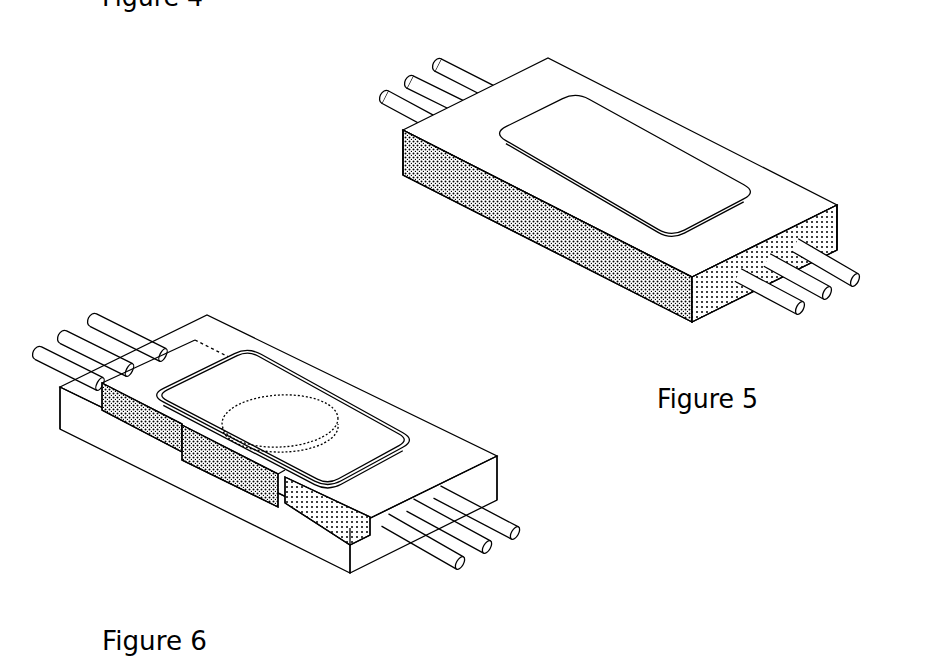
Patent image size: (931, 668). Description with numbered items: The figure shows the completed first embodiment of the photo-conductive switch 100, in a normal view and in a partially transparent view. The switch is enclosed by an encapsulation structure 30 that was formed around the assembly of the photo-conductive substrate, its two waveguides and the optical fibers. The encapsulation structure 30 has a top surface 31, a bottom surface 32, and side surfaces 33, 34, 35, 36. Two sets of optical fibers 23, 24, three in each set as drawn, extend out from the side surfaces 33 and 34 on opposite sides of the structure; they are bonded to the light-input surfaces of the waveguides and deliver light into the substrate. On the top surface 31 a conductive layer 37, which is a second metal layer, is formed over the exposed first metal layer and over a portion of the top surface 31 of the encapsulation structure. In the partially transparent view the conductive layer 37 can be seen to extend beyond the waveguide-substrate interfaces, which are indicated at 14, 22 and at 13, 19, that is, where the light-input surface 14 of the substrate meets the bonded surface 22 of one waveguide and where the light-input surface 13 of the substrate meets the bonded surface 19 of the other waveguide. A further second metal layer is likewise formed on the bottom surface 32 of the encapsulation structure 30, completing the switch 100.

In FIG. 5, the photo-conductive switch 100 is at (621, 180).
In FIG. 6, the photo-conductive switch 100 is at (280, 435).
In FIG. 5, the encapsulation structure 30 is at (623, 197).
In FIG. 6, the encapsulation structure 30 is at (285, 448).
In FIG. 5, the top surface 31 is at (597, 86).
In FIG. 6, the top surface 31 is at (231, 330).
In FIG. 5, the bottom surface 32 is at (547, 226).
In FIG. 6, the bottom surface 32 is at (205, 480).
In FIG. 5, the side surface 33 is at (712, 297).
In FIG. 6, the side surface 33 is at (370, 555).
In FIG. 5, the side surface 34 is at (402, 150).
In FIG. 6, the side surface 34 is at (60, 410).
In FIG. 5, the side surface 35 is at (598, 258).
In FIG. 6, the side surface 35 is at (257, 512).
In FIG. 5, the side surface 36 is at (838, 221).
In FIG. 6, the side surface 36 is at (497, 475).
In FIG. 5, the conductive layer 37 is at (630, 150).
In FIG. 6, the conductive layer 37 is at (341, 392).
In FIG. 5, the optical fibers 23 is at (866, 297).
In FIG. 6, the optical fibers 23 is at (533, 540).
In FIG. 5, the optical fibers 24 is at (443, 53).
In FIG. 6, the optical fibers 24 is at (103, 307).
In FIG. 6, the light-input surface 14 is at (275, 440).
In FIG. 6, the surface of waveguide 22 is at (275, 440).
In FIG. 6, the light-input surface 13 is at (334, 419).
In FIG. 6, the surface of waveguide 19 is at (363, 430).